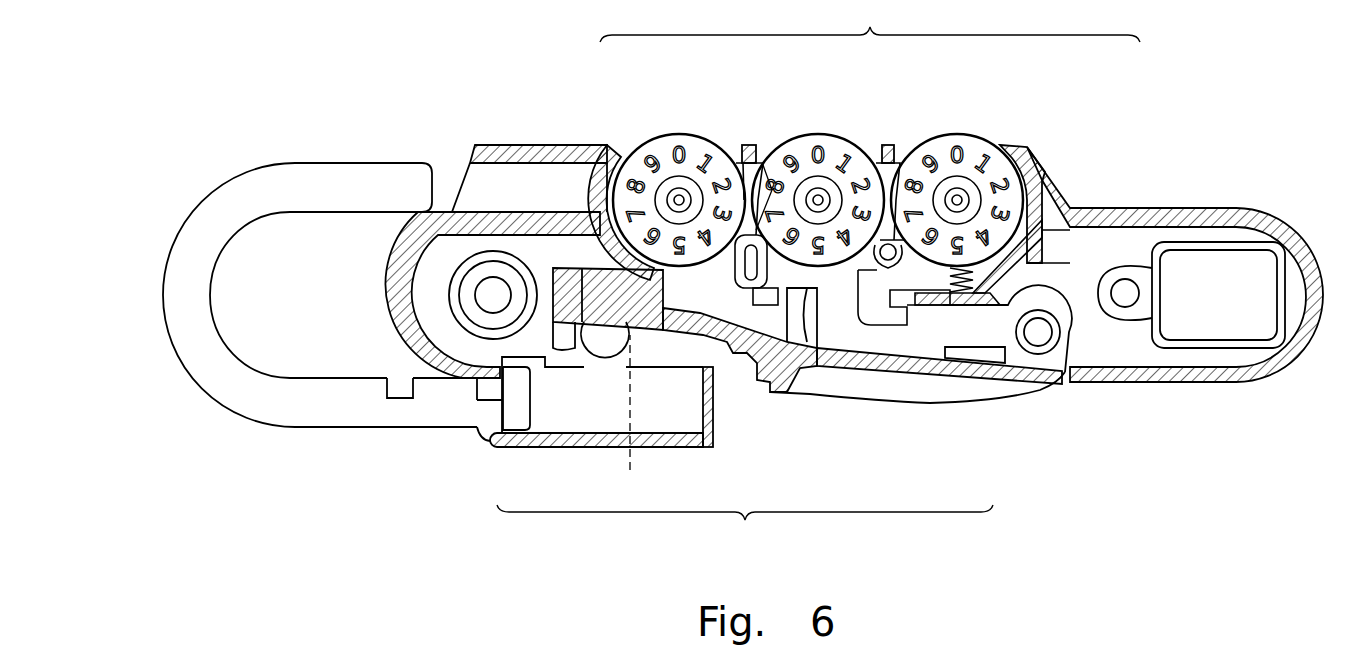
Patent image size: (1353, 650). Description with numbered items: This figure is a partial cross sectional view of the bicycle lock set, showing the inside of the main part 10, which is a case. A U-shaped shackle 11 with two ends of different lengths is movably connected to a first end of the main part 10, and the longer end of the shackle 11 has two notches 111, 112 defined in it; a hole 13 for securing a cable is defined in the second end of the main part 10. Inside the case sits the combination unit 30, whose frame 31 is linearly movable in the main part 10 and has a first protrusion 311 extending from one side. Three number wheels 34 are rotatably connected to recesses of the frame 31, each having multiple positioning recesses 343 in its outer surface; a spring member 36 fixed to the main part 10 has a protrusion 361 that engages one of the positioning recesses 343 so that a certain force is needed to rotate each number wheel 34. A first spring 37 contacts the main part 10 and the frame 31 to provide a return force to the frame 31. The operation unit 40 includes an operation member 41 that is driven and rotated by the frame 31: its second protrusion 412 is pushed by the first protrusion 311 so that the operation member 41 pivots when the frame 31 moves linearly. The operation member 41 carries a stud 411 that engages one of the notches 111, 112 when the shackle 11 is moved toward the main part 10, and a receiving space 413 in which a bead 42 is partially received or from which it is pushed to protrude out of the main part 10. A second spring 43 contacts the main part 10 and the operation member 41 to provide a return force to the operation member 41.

The main part 10 is at (516, 137).
The shackle 11 is at (346, 337).
The notch 111 is at (400, 397).
The notch 112 is at (480, 400).
The hole 13 is at (1228, 302).
The combination unit 30 is at (870, 21).
The frame 31 is at (918, 283).
The first protrusion 311 is at (772, 188).
The number wheel 34 is at (633, 165).
The positioning recess 343 is at (838, 138).
The protrusion 361 is at (673, 190).
The spring member 36 is at (746, 178).
The first spring 37 is at (1078, 208).
The operation unit 40 is at (745, 529).
The operation member 41 is at (703, 333).
The stud 411 is at (562, 343).
The second protrusion 412 is at (803, 352).
The receiving space 413 is at (630, 422).
The bead 42 is at (600, 348).
The second spring 43 is at (993, 403).